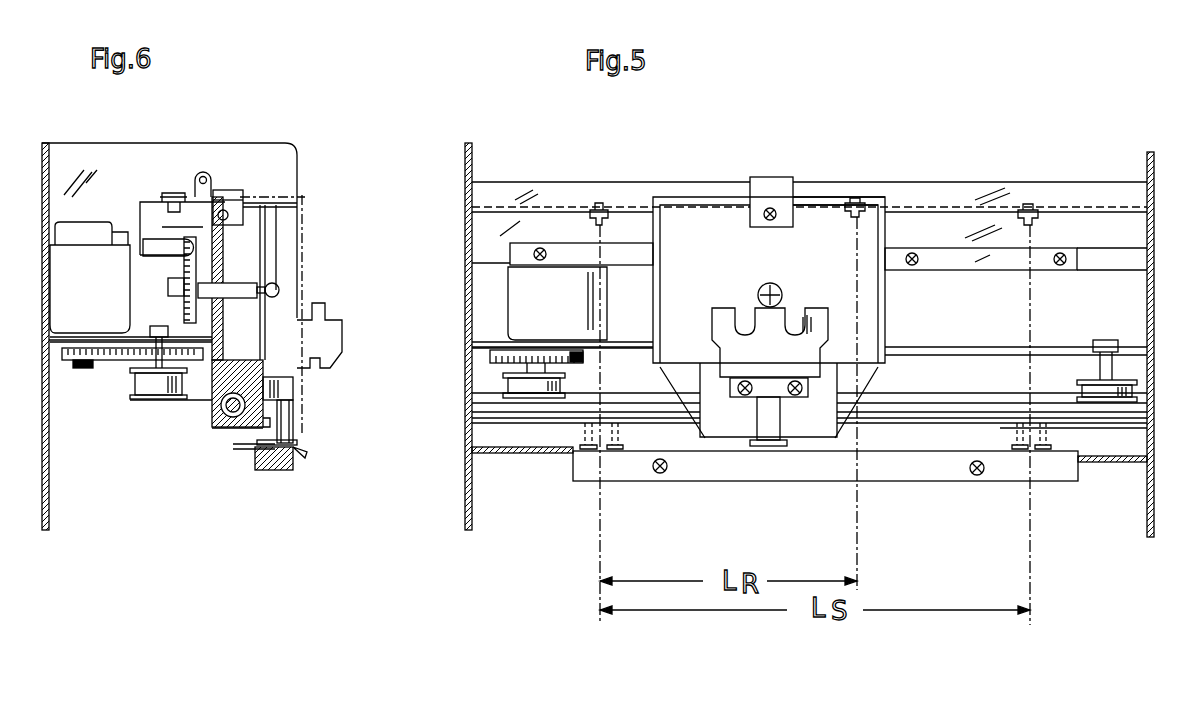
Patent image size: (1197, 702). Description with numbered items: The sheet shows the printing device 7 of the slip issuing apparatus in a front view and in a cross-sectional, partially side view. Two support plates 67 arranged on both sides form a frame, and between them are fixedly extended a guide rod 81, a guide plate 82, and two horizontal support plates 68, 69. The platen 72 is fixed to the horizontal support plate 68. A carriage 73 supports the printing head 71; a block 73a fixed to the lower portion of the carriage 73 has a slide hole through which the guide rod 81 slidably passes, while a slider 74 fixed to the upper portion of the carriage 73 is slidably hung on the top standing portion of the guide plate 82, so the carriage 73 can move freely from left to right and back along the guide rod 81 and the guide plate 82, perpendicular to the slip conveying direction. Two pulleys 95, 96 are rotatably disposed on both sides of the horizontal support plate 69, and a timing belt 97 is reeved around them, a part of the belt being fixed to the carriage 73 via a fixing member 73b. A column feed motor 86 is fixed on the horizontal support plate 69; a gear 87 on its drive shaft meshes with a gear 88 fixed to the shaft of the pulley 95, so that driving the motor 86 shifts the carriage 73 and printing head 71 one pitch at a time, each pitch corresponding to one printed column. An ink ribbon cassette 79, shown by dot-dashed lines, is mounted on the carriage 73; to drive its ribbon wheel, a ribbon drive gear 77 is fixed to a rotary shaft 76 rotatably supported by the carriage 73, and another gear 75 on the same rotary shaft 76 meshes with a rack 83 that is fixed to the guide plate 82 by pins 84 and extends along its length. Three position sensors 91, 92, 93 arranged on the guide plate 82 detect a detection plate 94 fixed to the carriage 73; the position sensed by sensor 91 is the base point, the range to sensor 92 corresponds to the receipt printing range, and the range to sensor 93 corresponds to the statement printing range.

In FIG. 5, the printing device 7 is at (1014, 147).
In FIG. 5, the support plates 67 is at (465, 233).
In FIG. 6, the horizontal support plate 68 is at (307, 449).
In FIG. 5, the horizontal support plate 68 is at (540, 453).
In FIG. 6, the horizontal support plate 69 is at (144, 340).
In FIG. 5, the horizontal support plate 69 is at (979, 347).
In FIG. 6, the printing head 71 is at (294, 408).
In FIG. 5, the printing head 71 is at (820, 350).
In FIG. 6, the platen 72 is at (292, 471).
In FIG. 5, the platen 72 is at (942, 482).
In FIG. 6, the carriage 73 is at (228, 252).
In FIG. 5, the carriage 73 is at (708, 228).
In FIG. 6, the block 73a is at (228, 420).
In FIG. 6, the fixing member 73b is at (212, 398).
In FIG. 6, the slider 74 is at (231, 191).
In FIG. 5, the slider 74 is at (773, 185).
In FIG. 6, the gear 75 is at (183, 278).
In FIG. 6, the rotary shaft 76 is at (220, 275).
In FIG. 6, the ribbon drive gear 77 is at (282, 289).
In FIG. 5, the ribbon drive gear 77 is at (782, 291).
In FIG. 6, the ink ribbon cassette 79 is at (300, 197).
In FIG. 5, the ink ribbon cassette 79 is at (830, 198).
In FIG. 6, the guide rod 81 is at (227, 432).
In FIG. 5, the guide rod 81 is at (1108, 418).
In FIG. 6, the guide plate 82 is at (146, 202).
In FIG. 5, the guide plate 82 is at (503, 190).
In FIG. 6, the rack 83 is at (225, 205).
In FIG. 5, the rack 83 is at (948, 255).
In FIG. 6, the pins 84 is at (150, 247).
In FIG. 5, the pins 84 is at (543, 249).
In FIG. 6, the column feed motor 86 is at (102, 303).
In FIG. 5, the column feed motor 86 is at (569, 316).
In FIG. 6, the gear 87 is at (83, 368).
In FIG. 5, the gear 87 is at (583, 357).
In FIG. 6, the gear 88 is at (132, 360).
In FIG. 5, the gear 88 is at (490, 356).
In FIG. 6, the position sensor 91 is at (174, 193).
In FIG. 5, the position sensor 91 is at (604, 210).
In FIG. 5, the position sensor 92 is at (862, 204).
In FIG. 5, the position sensor 93 is at (1035, 208).
In FIG. 6, the detection plate 94 is at (212, 200).
In FIG. 6, the pulley 95 is at (152, 390).
In FIG. 5, the pulley 95 is at (493, 392).
In FIG. 5, the pulley 96 is at (1132, 382).
In FIG. 6, the timing belt 97 is at (193, 392).
In FIG. 5, the timing belt 97 is at (646, 385).